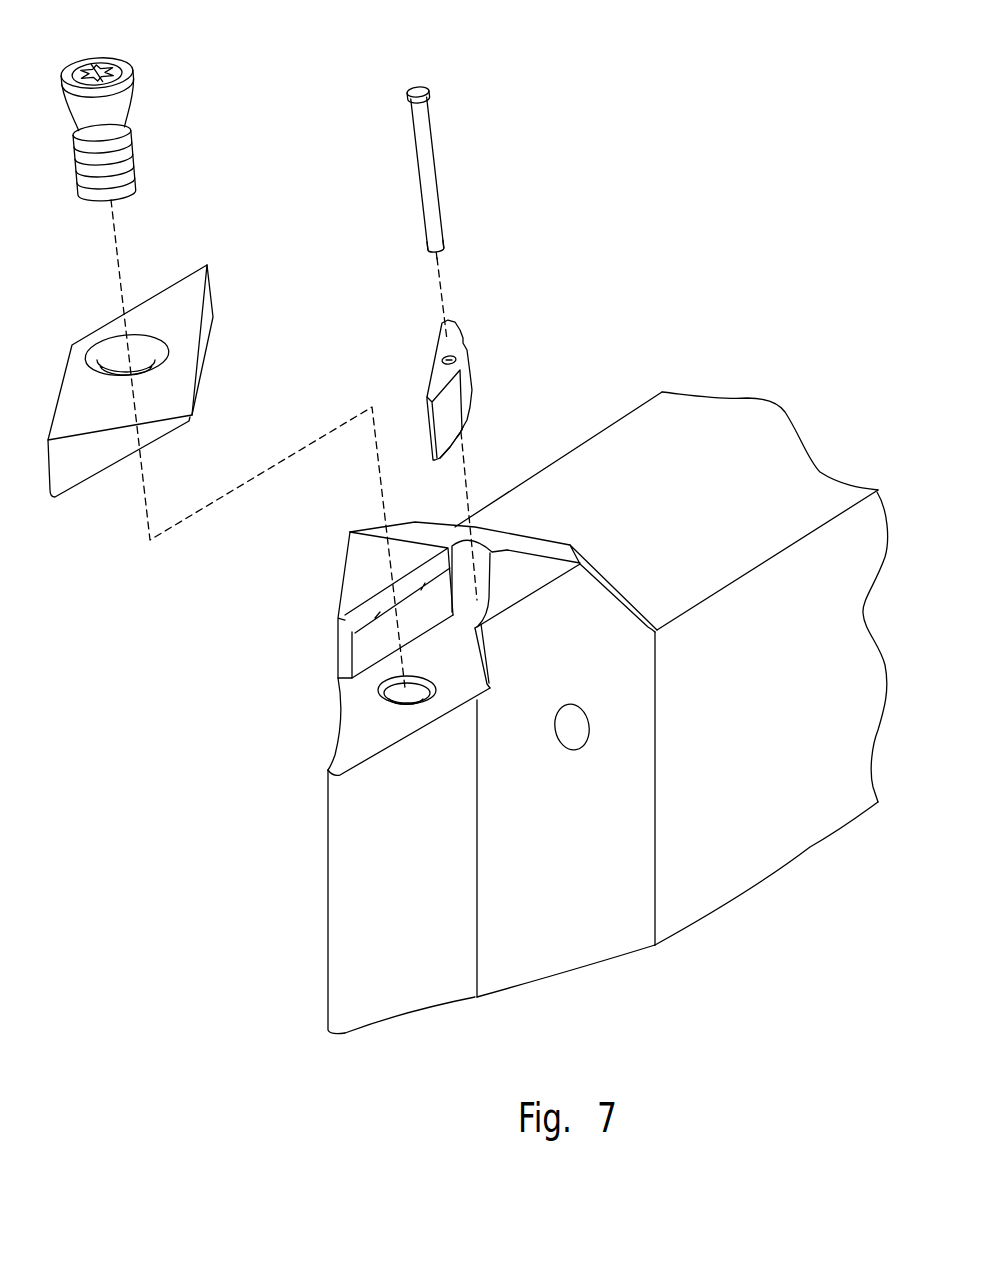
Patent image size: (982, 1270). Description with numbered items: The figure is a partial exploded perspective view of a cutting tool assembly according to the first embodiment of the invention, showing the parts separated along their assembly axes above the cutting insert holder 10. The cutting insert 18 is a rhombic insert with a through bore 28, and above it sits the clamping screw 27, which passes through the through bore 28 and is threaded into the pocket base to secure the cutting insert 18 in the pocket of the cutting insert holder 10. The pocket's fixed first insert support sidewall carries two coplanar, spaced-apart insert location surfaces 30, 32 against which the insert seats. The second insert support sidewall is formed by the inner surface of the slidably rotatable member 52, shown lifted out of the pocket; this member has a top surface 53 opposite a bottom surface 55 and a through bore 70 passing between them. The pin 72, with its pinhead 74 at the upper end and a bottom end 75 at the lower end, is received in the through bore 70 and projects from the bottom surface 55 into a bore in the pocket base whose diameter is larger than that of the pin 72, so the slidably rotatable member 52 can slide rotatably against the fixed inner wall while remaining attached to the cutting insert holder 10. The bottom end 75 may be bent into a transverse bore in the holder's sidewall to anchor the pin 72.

The cutting insert holder 10 is at (575, 732).
The cutting insert 18 is at (148, 462).
The clamping screw 27 is at (142, 70).
The through bore 28 is at (142, 347).
The insert location surface 30 is at (432, 577).
The insert location surface 32 is at (345, 620).
The slidably rotatable member 52 is at (482, 372).
The top surface 53 is at (440, 385).
The bottom surface 55 is at (467, 432).
The through bore 70 is at (445, 352).
The pin 72 is at (496, 152).
The pinhead 74 is at (428, 85).
The bottom end 75 is at (447, 243).